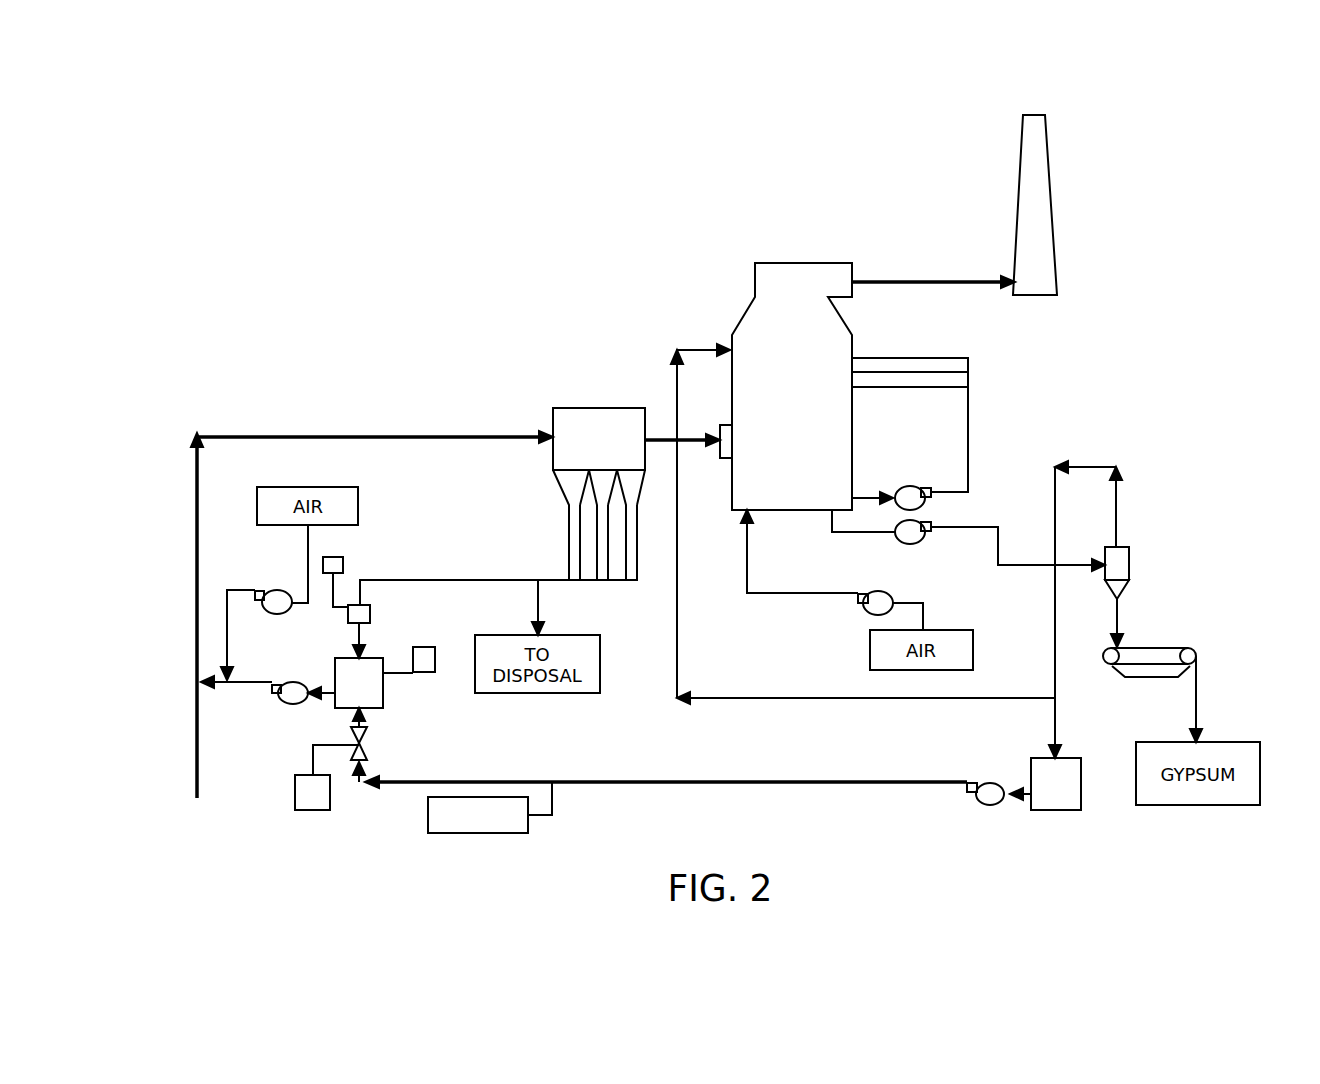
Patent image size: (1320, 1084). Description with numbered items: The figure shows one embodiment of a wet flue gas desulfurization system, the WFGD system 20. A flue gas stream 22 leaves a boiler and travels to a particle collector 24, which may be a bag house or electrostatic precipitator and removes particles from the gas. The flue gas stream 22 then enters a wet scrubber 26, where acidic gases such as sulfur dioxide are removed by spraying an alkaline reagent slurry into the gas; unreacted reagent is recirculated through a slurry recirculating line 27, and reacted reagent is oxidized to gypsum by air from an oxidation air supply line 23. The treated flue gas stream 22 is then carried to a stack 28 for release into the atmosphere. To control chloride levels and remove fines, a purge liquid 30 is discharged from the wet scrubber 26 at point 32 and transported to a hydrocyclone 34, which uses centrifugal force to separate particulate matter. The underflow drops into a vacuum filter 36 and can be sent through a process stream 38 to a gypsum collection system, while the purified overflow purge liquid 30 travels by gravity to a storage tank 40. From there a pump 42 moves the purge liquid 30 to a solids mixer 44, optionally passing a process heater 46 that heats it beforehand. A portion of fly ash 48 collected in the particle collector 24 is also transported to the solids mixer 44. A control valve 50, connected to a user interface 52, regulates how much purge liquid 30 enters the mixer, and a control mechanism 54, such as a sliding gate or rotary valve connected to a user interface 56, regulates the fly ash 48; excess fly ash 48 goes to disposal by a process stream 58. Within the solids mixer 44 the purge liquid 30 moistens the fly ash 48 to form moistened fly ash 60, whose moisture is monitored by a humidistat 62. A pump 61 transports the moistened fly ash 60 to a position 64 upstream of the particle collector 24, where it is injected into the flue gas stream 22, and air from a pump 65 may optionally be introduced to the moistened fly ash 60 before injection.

The WFGD system 20 is at (308, 214).
The flue gas stream 22 is at (334, 436).
The oxidation air supply line 23 is at (770, 596).
The particle collector 24 is at (598, 408).
The wet scrubber 26 is at (745, 310).
The slurry recirculating line 27 is at (970, 447).
The stack 28 is at (1053, 182).
The purge liquid 30 is at (710, 348).
The point 32 is at (828, 515).
The hydrocyclone 34 is at (1129, 560).
The vacuum filter 36 is at (1182, 648).
The process stream 38 is at (1198, 697).
The storage tank 40 is at (1081, 770).
The pump 42 is at (985, 806).
The solids mixer 44 is at (383, 688).
The process heater 46 is at (480, 833).
The fly ash 48 is at (475, 580).
The control valve 50 is at (367, 735).
The user interface 52 is at (295, 795).
The control mechanism 54 is at (370, 614).
The user interface 56 is at (343, 565).
The process stream 58 is at (548, 608).
The moistened fly ash 60 is at (335, 665).
The pump 61 is at (293, 705).
The humidistat 62 is at (435, 650).
The position 64 is at (201, 685).
The pump 65 is at (265, 595).